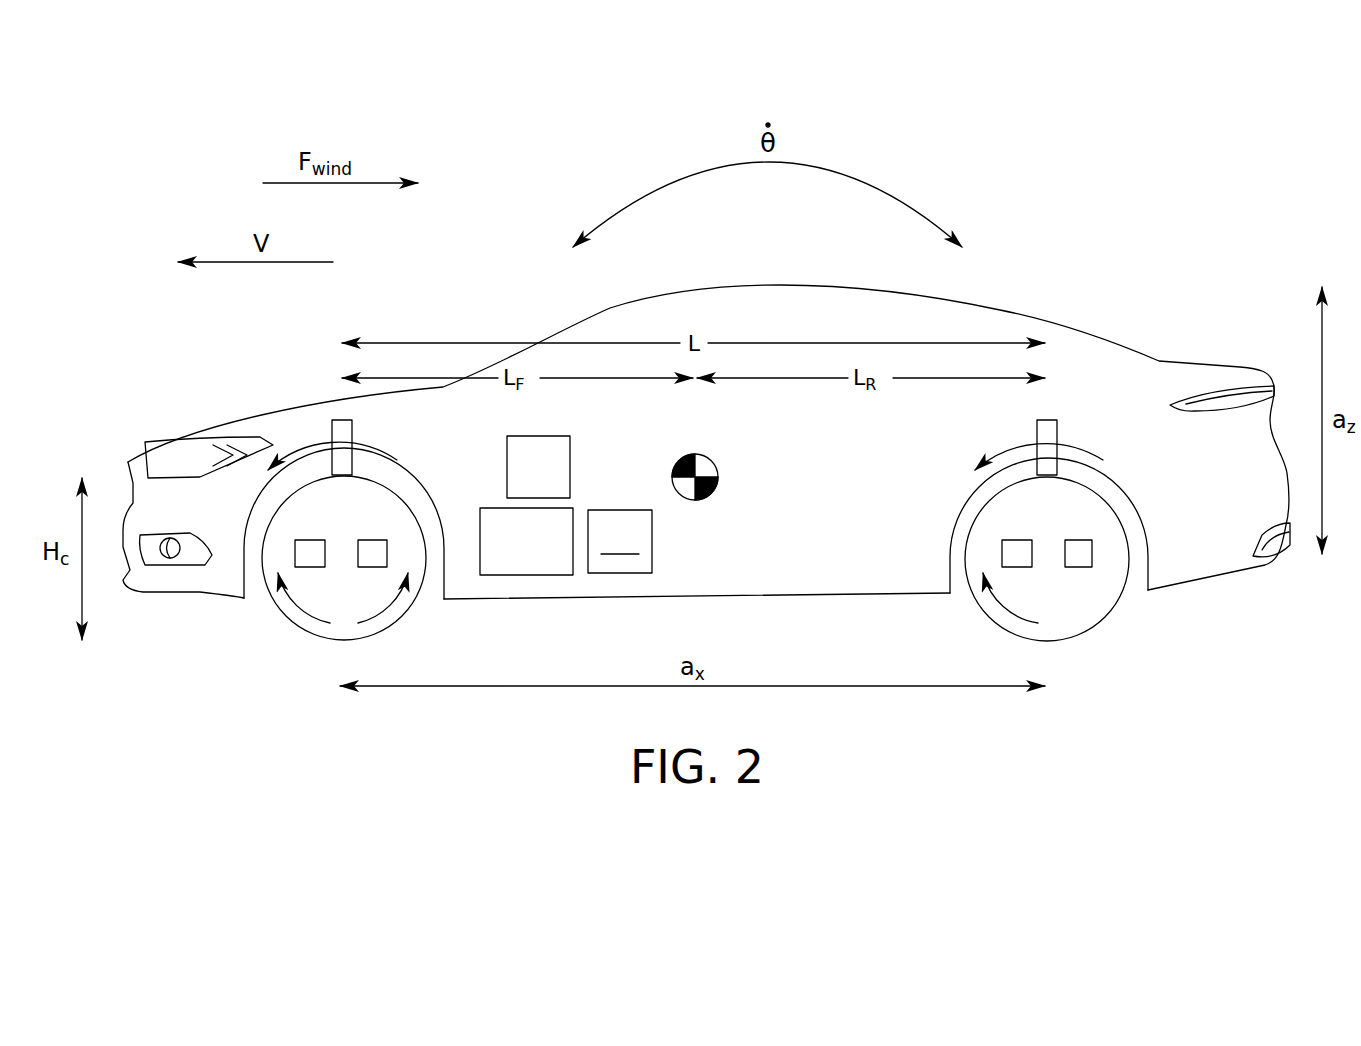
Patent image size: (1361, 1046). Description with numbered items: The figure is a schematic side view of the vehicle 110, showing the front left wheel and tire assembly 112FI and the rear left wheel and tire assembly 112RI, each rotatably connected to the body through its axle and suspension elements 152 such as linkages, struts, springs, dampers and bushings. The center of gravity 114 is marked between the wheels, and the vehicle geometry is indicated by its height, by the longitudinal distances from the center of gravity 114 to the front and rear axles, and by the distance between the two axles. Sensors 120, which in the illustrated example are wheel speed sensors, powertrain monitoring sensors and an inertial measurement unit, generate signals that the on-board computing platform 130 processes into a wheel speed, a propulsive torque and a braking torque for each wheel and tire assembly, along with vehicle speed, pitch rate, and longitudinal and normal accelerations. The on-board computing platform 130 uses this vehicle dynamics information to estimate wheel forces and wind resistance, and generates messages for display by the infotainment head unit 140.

The vehicle 110 is at (1148, 243).
The front left wheel and tire assembly 112FI is at (295, 627).
The rear left wheel and tire assembly 112RI is at (1095, 625).
The center of gravity 114 is at (718, 482).
The sensors 120 is at (295, 553).
The on-board computing platform 130 is at (507, 566).
The infotainment head unit 140 is at (519, 492).
The suspension elements 152 is at (352, 435).